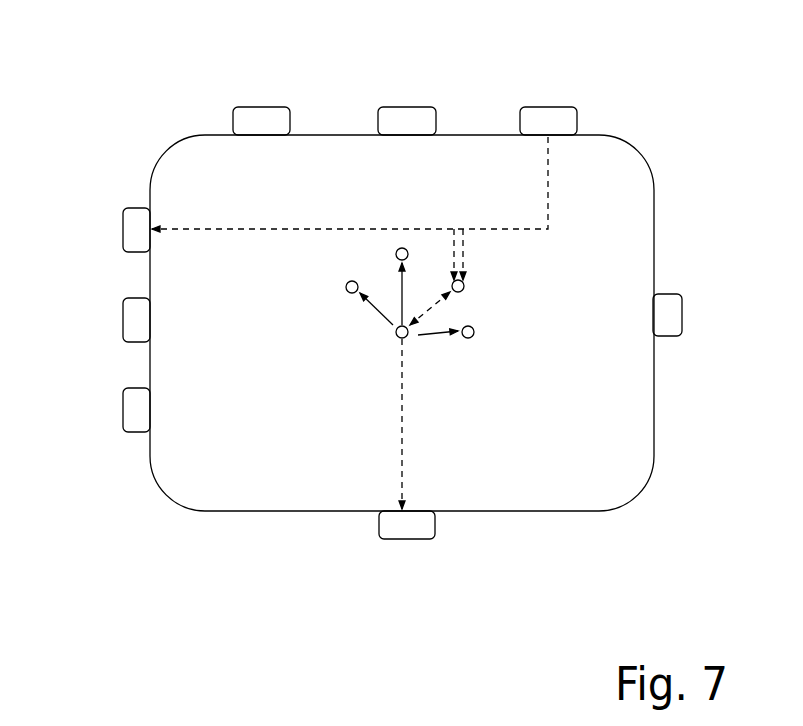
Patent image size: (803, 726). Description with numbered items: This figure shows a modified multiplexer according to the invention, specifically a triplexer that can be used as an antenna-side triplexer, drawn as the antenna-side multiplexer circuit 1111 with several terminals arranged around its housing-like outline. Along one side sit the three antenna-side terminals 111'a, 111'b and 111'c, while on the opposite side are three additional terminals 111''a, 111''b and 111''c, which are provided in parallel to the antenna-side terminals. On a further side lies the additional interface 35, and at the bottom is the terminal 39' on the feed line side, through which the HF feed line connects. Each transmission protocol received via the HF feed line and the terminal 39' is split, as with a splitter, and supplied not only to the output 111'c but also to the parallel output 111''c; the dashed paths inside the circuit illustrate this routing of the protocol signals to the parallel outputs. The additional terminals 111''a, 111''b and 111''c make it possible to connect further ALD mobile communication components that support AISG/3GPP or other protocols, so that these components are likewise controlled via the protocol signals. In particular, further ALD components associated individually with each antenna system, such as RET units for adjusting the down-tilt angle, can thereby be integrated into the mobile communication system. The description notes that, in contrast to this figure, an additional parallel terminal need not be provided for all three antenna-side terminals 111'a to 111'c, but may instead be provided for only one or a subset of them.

The antenna-side multiplexer circuit 1111 is at (663, 117).
The antenna-side terminal 111'a is at (264, 87).
The antenna-side terminal 111'b is at (412, 87).
The antenna-side terminal 111'c is at (557, 86).
The additional terminal 111''a is at (92, 410).
The additional terminal 111''b is at (92, 320).
The additional terminal 111''c is at (91, 228).
The additional interface 35 is at (675, 318).
The terminal on the feed line side 39' is at (407, 576).